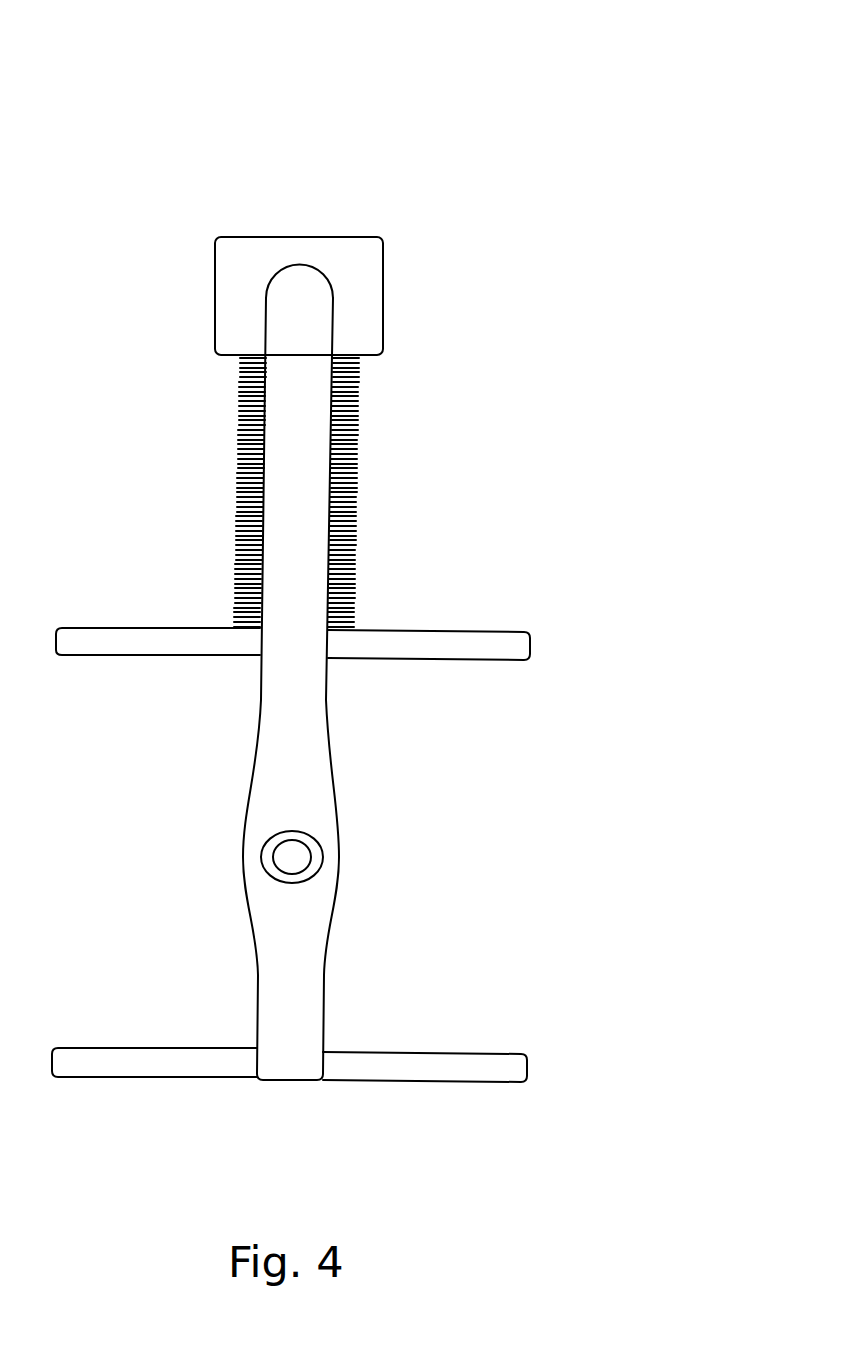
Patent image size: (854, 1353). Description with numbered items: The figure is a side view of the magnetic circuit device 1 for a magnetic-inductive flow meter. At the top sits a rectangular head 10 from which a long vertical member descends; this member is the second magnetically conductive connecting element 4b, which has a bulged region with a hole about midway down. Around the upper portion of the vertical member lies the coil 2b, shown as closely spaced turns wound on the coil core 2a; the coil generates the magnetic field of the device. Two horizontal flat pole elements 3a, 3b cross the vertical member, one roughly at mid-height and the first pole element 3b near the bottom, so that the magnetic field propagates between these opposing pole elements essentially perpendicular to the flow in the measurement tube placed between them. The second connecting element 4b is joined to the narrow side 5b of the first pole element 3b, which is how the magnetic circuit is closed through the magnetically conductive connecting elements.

The magnetic circuit device 1 is at (432, 175).
The head block 10 is at (360, 274).
The coil core 2a is at (353, 442).
The coil 2b is at (355, 446).
The flat pole element 3a is at (510, 645).
The first pole element 3b is at (527, 1066).
The second magnetically conductive connecting element 4b is at (305, 802).
The narrow side 5b is at (128, 1068).